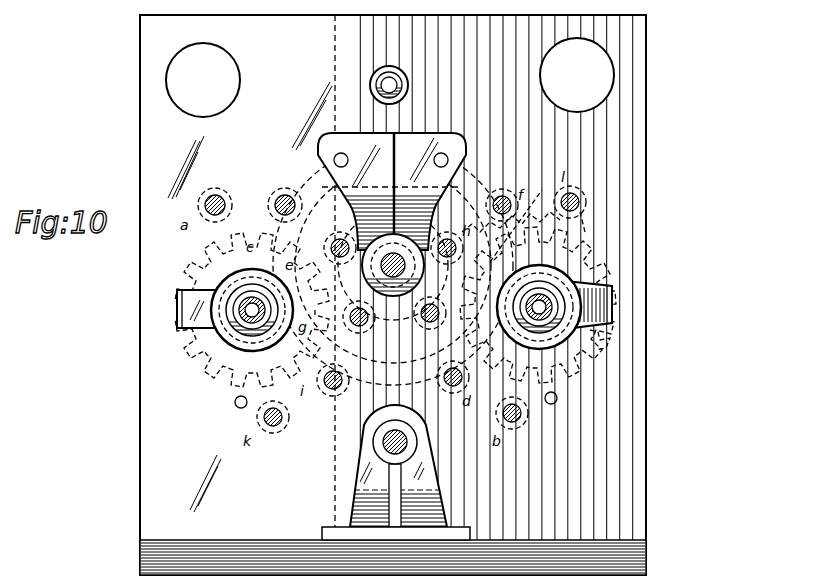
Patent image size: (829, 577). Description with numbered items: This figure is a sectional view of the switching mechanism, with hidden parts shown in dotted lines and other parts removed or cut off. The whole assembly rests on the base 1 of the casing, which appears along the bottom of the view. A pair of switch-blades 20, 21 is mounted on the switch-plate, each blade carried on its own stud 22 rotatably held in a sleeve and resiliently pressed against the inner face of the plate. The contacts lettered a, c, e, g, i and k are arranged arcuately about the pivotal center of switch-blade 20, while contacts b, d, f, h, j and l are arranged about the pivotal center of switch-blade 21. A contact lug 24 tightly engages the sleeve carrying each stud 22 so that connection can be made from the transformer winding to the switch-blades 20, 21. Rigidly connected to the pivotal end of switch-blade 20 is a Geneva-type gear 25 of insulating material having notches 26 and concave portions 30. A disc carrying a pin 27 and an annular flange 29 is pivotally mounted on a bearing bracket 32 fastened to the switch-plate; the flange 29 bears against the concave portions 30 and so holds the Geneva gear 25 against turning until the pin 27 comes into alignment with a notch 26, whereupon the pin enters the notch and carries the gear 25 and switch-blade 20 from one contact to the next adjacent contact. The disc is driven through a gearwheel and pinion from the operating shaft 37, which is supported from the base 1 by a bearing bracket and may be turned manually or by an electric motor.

The base 1 is at (650, 562).
The switch-blade 20 is at (218, 360).
The switch-blade 21 is at (585, 232).
The stud 22 is at (252, 356).
The lug 24 is at (177, 309).
The gear 25 is at (196, 252).
The notch 26 is at (234, 393).
The pin 27 is at (455, 247).
The flange 29 is at (343, 215).
The concave portion 30 is at (660, 330).
The bearing bracket 32 is at (322, 150).
The operating shaft 37 is at (383, 444).